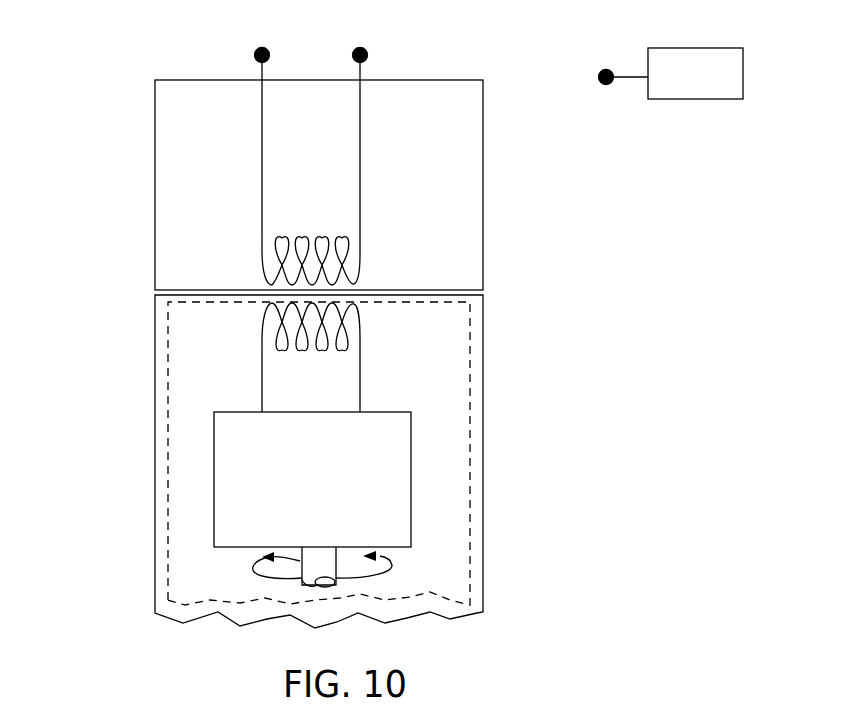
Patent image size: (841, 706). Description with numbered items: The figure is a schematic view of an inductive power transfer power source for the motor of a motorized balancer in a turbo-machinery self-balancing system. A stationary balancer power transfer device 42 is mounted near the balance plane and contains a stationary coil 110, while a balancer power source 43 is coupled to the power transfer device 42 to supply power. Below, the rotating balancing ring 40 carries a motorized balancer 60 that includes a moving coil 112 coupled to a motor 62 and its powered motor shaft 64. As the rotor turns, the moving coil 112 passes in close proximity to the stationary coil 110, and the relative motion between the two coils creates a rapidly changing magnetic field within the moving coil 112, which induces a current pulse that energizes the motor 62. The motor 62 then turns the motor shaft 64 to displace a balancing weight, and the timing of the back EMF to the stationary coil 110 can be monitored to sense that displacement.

The balancing ring 40 is at (543, 366).
The balancer power transfer device 42 is at (514, 163).
The balancer power source 43 is at (723, 88).
The motorized balancer 60 is at (482, 553).
The motor 62 is at (238, 476).
The motor shaft 64 is at (256, 559).
The stationary coil 110 is at (262, 211).
The moving coil 112 is at (360, 367).